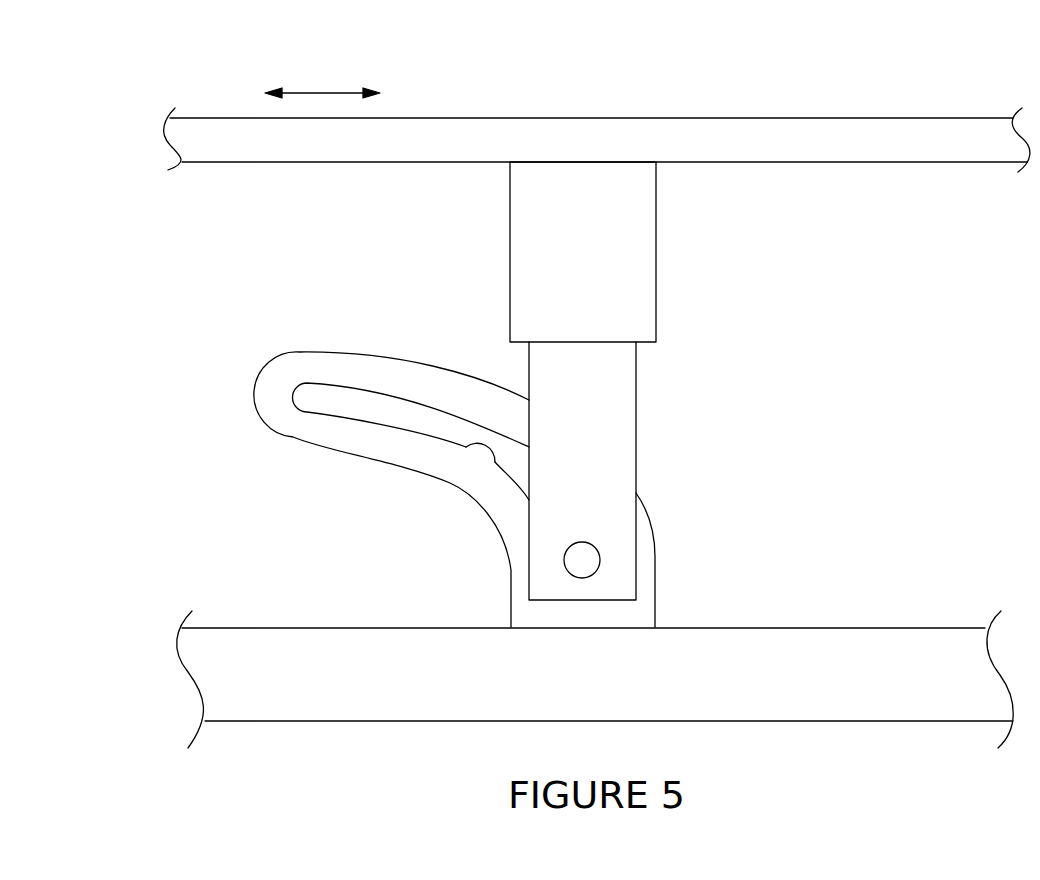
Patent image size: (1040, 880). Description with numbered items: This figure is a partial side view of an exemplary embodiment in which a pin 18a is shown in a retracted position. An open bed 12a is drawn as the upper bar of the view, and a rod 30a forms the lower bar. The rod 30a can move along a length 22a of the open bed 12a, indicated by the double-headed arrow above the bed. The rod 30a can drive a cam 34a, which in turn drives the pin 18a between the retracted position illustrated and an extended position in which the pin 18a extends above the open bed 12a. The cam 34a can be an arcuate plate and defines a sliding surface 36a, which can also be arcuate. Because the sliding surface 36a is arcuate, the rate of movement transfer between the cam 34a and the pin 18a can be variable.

The open bed 12a is at (749, 118).
The length 22a is at (342, 92).
The pin 18a is at (620, 405).
The cam 34a is at (283, 383).
The sliding surface 36a is at (467, 447).
The rod 30a is at (295, 666).